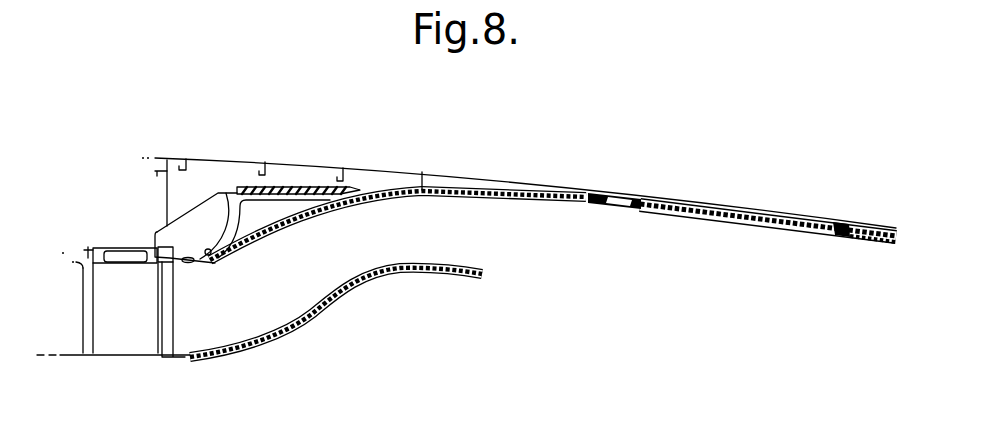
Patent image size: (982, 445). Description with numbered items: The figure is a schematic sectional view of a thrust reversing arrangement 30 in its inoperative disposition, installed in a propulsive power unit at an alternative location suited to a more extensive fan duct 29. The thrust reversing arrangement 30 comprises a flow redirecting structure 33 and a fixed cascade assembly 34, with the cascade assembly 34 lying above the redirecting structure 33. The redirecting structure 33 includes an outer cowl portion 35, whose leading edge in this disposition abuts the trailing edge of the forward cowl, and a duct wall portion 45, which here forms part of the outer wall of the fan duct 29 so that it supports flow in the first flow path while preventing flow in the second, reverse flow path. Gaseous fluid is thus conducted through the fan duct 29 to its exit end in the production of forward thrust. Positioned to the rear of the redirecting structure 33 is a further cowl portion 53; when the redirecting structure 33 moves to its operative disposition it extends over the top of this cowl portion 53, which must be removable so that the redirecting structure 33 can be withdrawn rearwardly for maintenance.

The fan duct 29 is at (265, 298).
The thrust reversing arrangement 30 is at (197, 139).
The flow redirecting structure 33 is at (437, 172).
The fixed cascade assembly 34 is at (252, 187).
The cowl portion 35 is at (302, 162).
The duct wall portion 45 is at (283, 235).
The cowl portion 53 is at (763, 213).